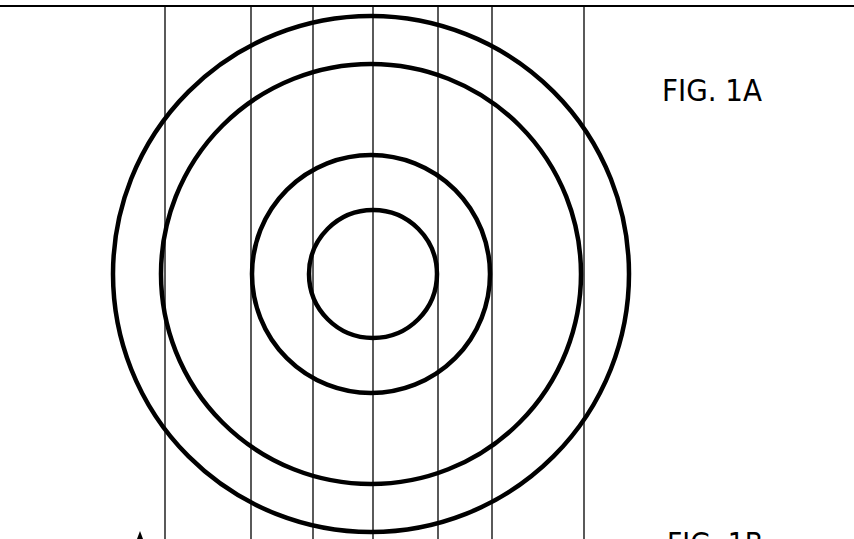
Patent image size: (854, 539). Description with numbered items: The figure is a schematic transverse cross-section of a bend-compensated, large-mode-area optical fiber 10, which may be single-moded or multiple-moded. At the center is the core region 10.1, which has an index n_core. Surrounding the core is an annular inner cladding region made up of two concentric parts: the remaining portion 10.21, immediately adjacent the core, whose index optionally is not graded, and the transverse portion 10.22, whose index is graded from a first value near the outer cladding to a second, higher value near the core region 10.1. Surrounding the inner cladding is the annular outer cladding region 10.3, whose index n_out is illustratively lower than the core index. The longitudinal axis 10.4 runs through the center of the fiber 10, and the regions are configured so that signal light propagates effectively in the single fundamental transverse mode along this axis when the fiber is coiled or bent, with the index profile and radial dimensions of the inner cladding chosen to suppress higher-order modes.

The bend-compensated LMA optical fiber 10 is at (407, 272).
The core region 10.1 is at (382, 227).
The remaining portion of the inner cladding region 10.21 is at (458, 220).
The transverse portion of the inner cladding region 10.22 is at (562, 227).
The outer cladding region 10.3 is at (620, 283).
The longitudinal axis 10.4 is at (370, 275).